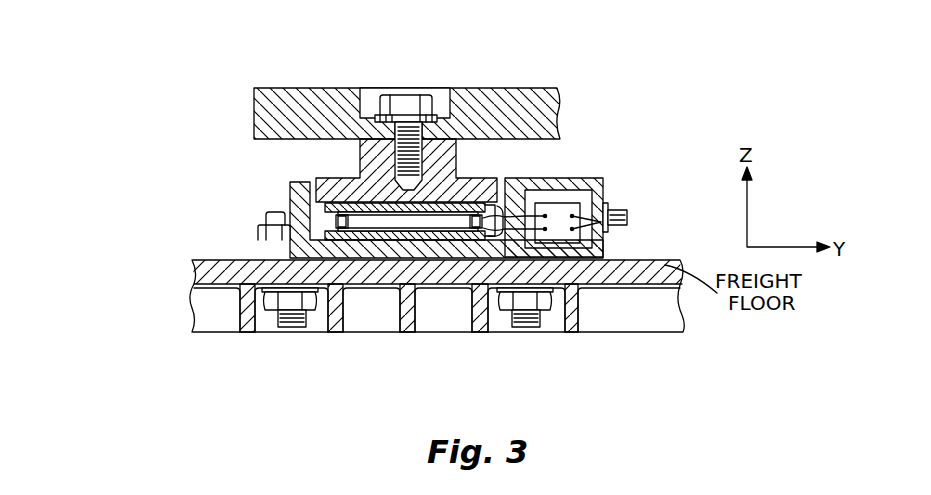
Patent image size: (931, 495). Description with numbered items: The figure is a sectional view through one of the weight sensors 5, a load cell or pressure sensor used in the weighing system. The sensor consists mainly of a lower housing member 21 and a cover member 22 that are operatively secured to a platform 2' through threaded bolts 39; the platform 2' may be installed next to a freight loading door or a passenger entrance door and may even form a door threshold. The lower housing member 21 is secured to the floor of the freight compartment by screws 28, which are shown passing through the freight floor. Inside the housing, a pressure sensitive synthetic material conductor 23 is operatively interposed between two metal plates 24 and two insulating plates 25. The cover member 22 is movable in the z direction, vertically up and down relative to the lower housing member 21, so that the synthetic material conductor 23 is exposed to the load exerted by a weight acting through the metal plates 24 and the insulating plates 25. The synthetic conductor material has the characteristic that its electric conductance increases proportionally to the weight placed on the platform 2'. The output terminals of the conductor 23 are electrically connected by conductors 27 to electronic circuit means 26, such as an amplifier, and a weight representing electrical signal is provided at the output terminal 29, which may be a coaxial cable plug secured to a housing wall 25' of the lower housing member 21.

The platform 2' is at (407, 95).
The weight sensor 5 is at (575, 108).
The lower housing member 21 is at (293, 187).
The cover member 22 is at (337, 179).
The pressure sensitive synthetic material conductor 23 is at (333, 222).
The metal plates 24 is at (367, 214).
The insulating plates 25 is at (487, 192).
The housing wall 25' is at (638, 237).
The electronic circuit means 26 is at (566, 207).
The conductors 27 is at (503, 228).
The screws 28 is at (288, 328).
The output terminal 29 is at (622, 208).
The threaded bolts 39 is at (413, 95).